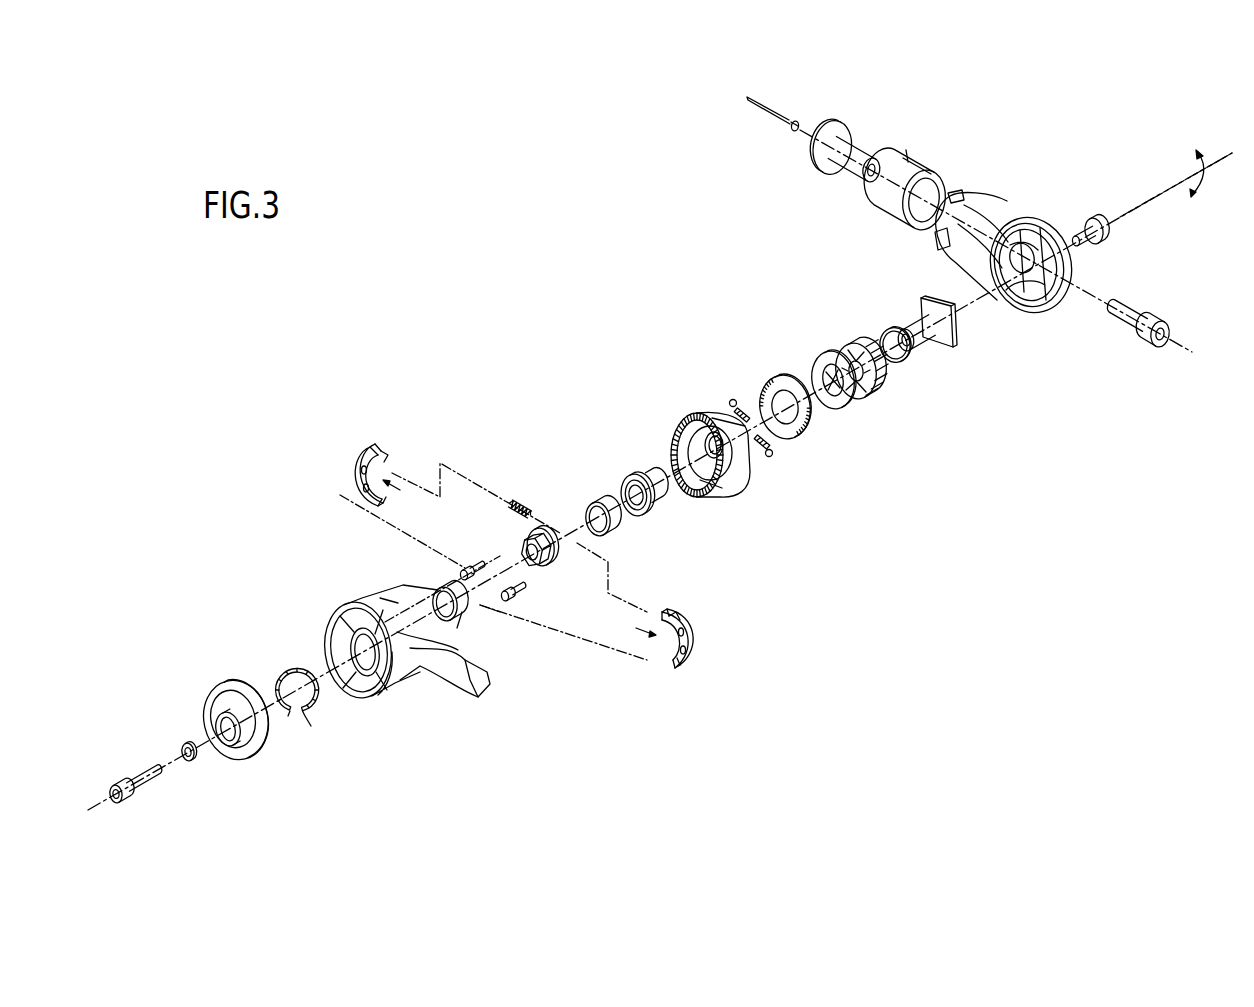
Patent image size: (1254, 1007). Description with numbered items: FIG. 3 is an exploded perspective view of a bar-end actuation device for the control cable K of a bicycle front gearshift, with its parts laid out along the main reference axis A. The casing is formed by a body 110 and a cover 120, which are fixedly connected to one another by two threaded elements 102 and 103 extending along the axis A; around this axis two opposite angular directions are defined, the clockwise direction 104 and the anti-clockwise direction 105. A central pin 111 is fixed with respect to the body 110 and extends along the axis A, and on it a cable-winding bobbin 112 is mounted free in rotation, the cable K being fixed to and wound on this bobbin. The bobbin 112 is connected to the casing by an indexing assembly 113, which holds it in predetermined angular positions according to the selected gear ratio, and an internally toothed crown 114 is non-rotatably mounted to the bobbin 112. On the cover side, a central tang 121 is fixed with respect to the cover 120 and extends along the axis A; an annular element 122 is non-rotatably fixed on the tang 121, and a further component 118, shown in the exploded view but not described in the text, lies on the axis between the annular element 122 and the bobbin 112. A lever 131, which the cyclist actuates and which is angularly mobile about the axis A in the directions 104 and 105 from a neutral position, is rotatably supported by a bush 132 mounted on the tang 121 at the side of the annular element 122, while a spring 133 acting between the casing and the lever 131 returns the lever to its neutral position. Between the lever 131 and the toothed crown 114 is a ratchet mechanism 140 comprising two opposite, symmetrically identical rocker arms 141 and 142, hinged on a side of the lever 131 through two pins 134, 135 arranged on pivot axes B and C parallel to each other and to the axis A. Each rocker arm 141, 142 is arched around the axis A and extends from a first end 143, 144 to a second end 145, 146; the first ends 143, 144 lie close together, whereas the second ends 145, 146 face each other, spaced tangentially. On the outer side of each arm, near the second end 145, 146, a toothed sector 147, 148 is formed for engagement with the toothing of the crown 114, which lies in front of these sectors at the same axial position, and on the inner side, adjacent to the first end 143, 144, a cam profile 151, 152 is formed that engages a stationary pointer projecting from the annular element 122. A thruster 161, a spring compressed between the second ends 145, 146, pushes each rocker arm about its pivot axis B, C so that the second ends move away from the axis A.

The threaded element 102 is at (1090, 247).
The threaded element 103 is at (143, 773).
The angular direction 104 is at (1186, 180).
The angular direction 105 is at (1207, 176).
The body 110 is at (1013, 207).
The central pin 111 is at (920, 317).
The cable-winding bobbin 112 is at (696, 463).
The indexing assembly 113 is at (912, 430).
The internally toothed crown 114 is at (697, 488).
The bushing 118 is at (645, 470).
The cover 120 is at (227, 688).
The central tang 121 is at (547, 540).
The annular element 122 is at (618, 518).
The lever 131 is at (452, 672).
The bush 132 is at (475, 608).
The spring 133 is at (311, 727).
The pin 134 is at (468, 567).
The pin 135 is at (523, 586).
The ratchet mechanism 140 is at (572, 552).
The first rocker arm 141 is at (359, 460).
The second rocker arm 142 is at (686, 642).
The first end 143 is at (380, 513).
The first end 144 is at (650, 657).
The second end 145 is at (393, 462).
The second end 146 is at (648, 602).
The toothed sector 147 is at (373, 453).
The toothed sector 148 is at (678, 612).
The cam profile 151 is at (411, 498).
The cam profile 152 is at (628, 627).
The thruster 161 is at (513, 502).
The axis A is at (1127, 207).
The pivot axis B is at (403, 600).
The pivot axis C is at (513, 607).
The control cable K is at (768, 118).